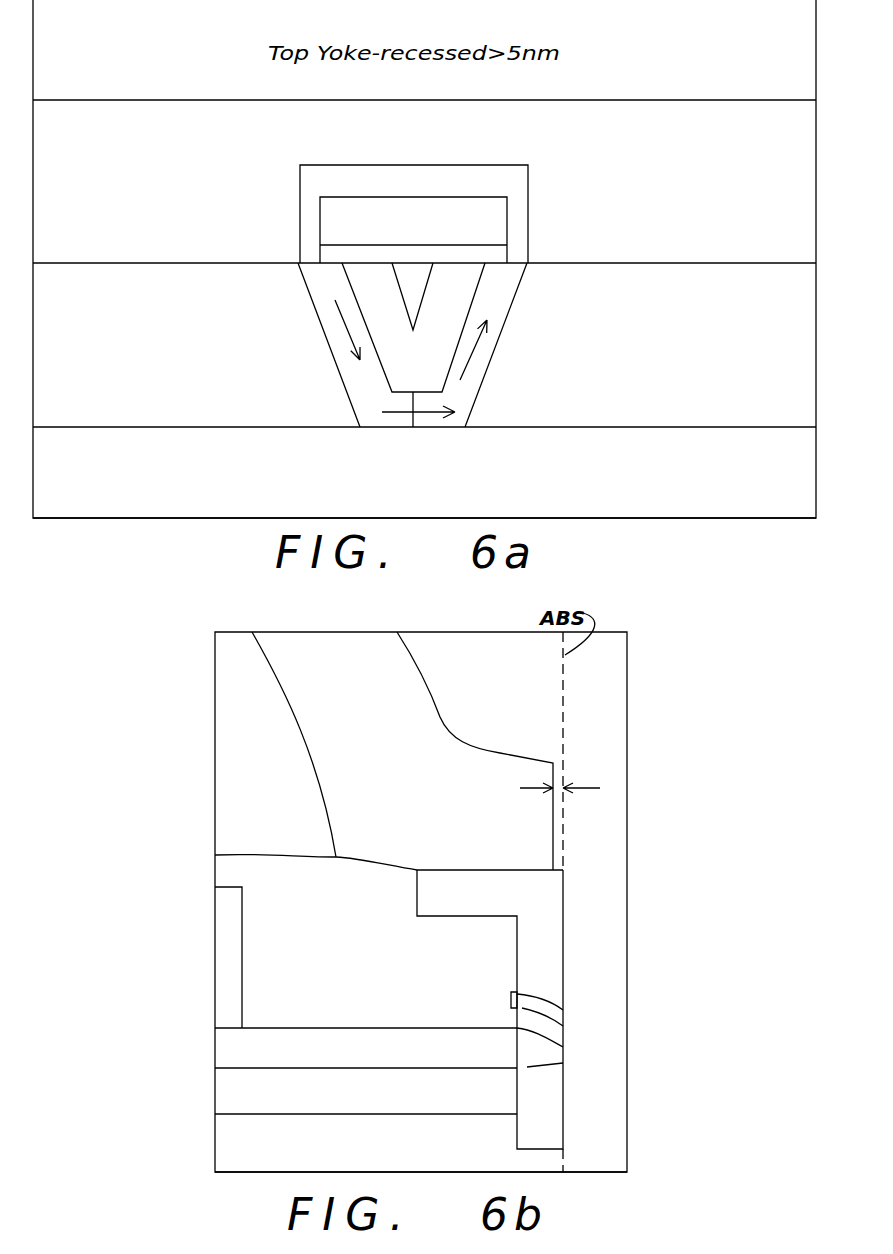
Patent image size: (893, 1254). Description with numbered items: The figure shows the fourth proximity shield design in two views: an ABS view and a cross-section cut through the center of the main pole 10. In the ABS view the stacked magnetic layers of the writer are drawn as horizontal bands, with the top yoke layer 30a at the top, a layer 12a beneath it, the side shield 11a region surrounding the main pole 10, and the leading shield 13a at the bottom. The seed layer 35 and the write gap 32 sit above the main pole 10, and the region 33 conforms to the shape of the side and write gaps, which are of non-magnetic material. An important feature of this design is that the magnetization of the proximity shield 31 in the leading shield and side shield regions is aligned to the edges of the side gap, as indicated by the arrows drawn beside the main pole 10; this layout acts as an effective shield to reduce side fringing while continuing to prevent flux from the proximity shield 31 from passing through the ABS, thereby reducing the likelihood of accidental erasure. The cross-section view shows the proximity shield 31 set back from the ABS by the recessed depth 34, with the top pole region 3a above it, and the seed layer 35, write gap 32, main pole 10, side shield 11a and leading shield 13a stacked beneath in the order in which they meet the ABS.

In FIG. 6a, the top yoke 30a is at (778, 26).
In FIG. 6a, the upper magnetic layer 12a is at (778, 131).
In FIG. 6a, the side shield 11a is at (778, 298).
In FIG. 6b, the side shield 11a is at (540, 1053).
In FIG. 6a, the leading shield 13a is at (778, 461).
In FIG. 6b, the leading shield 13a is at (537, 1123).
In FIG. 6a, the seed layer 35 is at (330, 222).
In FIG. 6b, the seed layer 35 is at (540, 1007).
In FIG. 6a, the write gap 32 is at (330, 253).
In FIG. 6b, the write gap 32 is at (540, 1022).
In FIG. 6a, the main pole 10 is at (413, 279).
In FIG. 6b, the main pole 10 is at (227, 1048).
In FIG. 6a, the flux guide 33 is at (335, 328).
In FIG. 6b, the recessed depth 34 is at (600, 788).
In FIG. 6b, the top pole 3a is at (537, 835).
In FIG. 6b, the proximity shield 31 is at (537, 952).